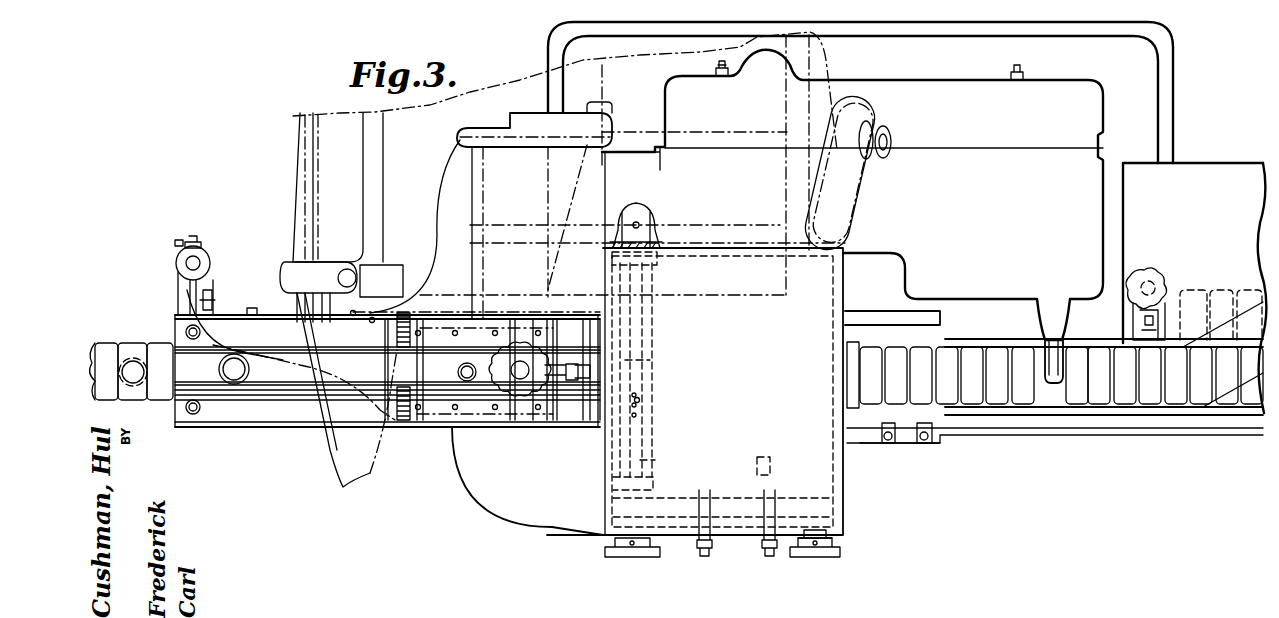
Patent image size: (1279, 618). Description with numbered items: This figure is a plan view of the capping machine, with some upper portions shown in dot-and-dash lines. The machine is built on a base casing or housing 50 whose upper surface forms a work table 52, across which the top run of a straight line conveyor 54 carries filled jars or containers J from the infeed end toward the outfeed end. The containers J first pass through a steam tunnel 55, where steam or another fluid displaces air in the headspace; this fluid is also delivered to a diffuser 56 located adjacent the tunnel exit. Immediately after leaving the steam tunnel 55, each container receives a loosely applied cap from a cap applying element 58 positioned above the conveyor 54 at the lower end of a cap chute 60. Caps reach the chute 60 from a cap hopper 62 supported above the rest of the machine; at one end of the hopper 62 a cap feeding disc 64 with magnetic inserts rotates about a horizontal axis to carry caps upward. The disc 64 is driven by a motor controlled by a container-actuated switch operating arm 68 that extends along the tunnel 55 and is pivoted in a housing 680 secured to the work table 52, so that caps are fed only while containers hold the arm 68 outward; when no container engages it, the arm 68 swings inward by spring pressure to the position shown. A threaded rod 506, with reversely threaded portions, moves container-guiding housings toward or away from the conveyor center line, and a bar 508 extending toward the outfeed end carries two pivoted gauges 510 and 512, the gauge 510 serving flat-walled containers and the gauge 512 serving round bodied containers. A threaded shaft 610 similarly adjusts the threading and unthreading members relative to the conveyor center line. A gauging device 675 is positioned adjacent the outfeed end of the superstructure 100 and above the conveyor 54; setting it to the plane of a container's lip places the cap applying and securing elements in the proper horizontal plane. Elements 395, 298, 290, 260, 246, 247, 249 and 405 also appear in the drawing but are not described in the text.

The base casing or housing 50 is at (1138, 133).
The superstructure 100 is at (1073, 230).
The lever 395 is at (277, 270).
The cap hopper 62 is at (733, 306).
The bracket 298 is at (688, 137).
The bobbin holder 290 is at (682, 222).
The housing box 260 is at (843, 500).
The threaded shaft 610 is at (708, 546).
The threaded rod 506 is at (773, 548).
The diffuser 56 is at (655, 418).
The guide 246 is at (645, 358).
The pin 247 is at (642, 400).
The sleeve 249 is at (653, 452).
The steam tunnel 55 is at (272, 412).
The cap chute 60 is at (445, 412).
The adjusting knob 405 is at (507, 398).
The cap applying element 58 is at (575, 403).
The switch operating arm 68 is at (275, 365).
The filled jars or containers J is at (215, 372).
The cap feeding disc 64 is at (379, 472).
The housing 680 is at (178, 262).
The straight line conveyor 54 is at (103, 358).
The work table 52 is at (1022, 412).
The gauge 512 is at (882, 418).
The gauge 510 is at (925, 417).
The bar 508 is at (905, 440).
The gauging device 675 is at (1057, 372).